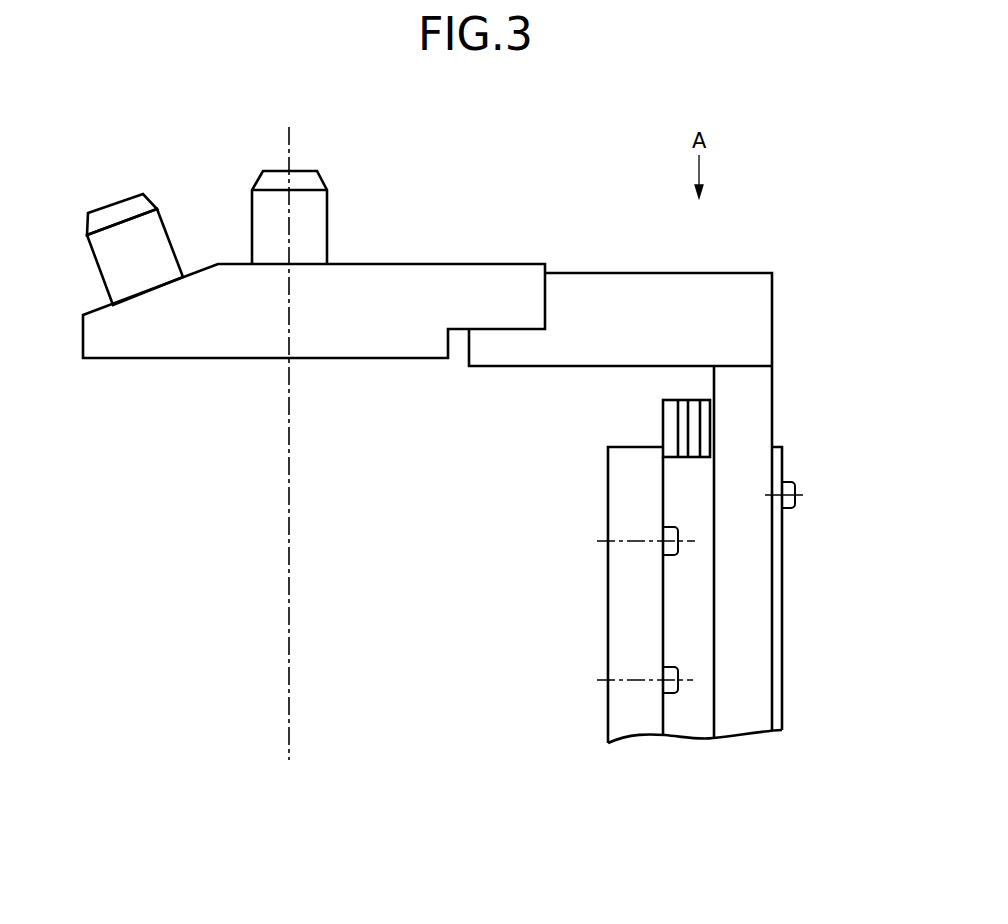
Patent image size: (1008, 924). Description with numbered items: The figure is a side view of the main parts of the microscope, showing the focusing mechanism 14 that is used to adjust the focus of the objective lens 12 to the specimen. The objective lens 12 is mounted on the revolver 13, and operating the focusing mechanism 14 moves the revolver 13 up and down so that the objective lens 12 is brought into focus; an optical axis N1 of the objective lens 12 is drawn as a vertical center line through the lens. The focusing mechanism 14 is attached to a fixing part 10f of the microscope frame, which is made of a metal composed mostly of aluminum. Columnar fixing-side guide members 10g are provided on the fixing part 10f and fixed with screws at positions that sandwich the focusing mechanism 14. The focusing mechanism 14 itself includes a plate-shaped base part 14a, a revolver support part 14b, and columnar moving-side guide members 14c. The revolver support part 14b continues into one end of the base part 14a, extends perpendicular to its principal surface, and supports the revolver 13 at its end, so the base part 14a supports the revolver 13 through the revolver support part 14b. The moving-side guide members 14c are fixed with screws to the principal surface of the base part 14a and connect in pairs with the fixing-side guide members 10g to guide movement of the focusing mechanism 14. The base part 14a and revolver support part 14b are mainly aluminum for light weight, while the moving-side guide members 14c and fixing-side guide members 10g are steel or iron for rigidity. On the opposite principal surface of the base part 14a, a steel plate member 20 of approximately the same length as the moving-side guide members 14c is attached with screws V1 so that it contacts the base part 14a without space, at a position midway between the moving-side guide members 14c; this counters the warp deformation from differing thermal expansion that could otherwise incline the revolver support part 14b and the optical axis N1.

The optical axis N1 is at (290, 142).
The objective lens 12 is at (327, 212).
The revolver 13 is at (414, 269).
The focusing mechanism 14 is at (664, 473).
The base part 14a is at (748, 420).
The revolver support part 14b is at (692, 280).
The moving-side guide members 14c is at (663, 413).
The fixing part 10f is at (623, 727).
The fixing-side guide members 10g is at (688, 725).
The plate member 20 is at (777, 575).
The screws V1 is at (795, 488).